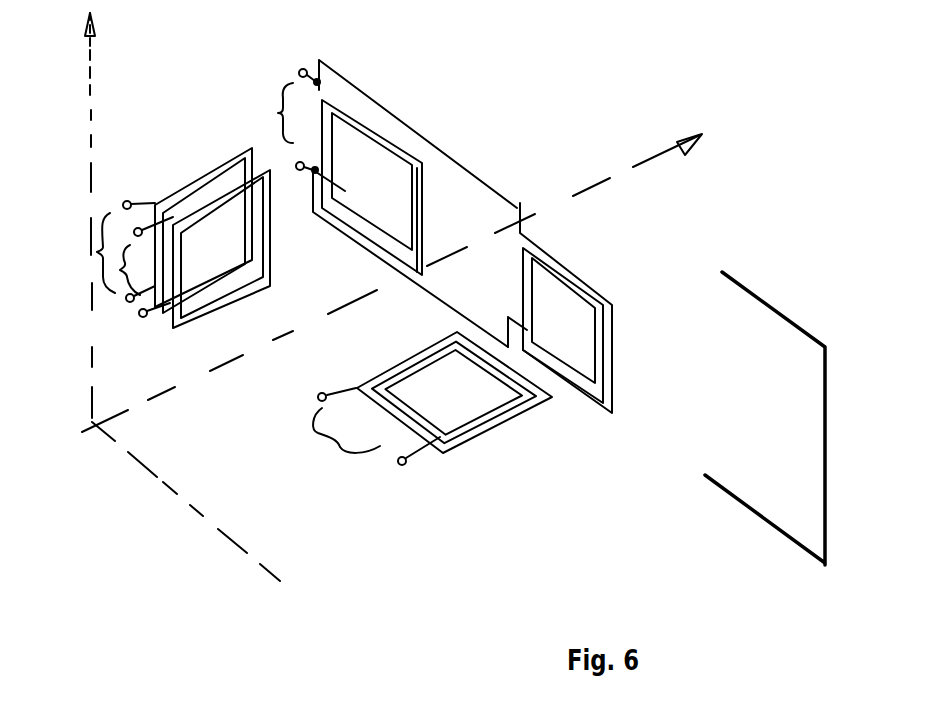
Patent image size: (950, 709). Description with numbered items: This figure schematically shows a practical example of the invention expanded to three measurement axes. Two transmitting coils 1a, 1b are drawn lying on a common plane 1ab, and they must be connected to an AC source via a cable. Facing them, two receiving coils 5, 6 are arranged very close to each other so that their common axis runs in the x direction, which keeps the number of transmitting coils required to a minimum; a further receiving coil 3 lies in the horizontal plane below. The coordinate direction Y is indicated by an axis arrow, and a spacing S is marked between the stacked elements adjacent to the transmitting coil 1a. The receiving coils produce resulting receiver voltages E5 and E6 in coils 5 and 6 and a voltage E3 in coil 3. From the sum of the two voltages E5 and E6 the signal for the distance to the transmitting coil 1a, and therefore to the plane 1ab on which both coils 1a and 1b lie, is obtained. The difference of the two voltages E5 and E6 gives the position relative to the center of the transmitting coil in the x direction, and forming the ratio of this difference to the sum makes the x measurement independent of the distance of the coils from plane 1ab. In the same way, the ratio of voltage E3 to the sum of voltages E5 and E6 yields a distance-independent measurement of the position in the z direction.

The transmitting coil 1a is at (382, 123).
The transmitting coil 1b is at (622, 340).
The plane 1ab is at (765, 418).
The receiving coil 3 is at (505, 433).
The receiving coil 5 is at (202, 170).
The receiving coil 6 is at (227, 307).
The spacing between stacked elements S is at (284, 121).
The receiver voltage E3 is at (368, 439).
The receiver voltage E5 is at (96, 251).
The receiver voltage E6 is at (120, 268).
The Y axis Y is at (76, 213).